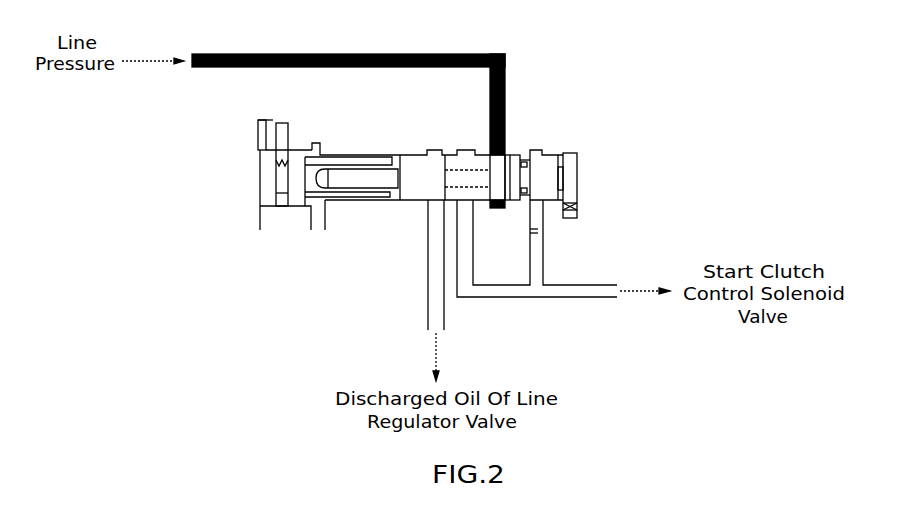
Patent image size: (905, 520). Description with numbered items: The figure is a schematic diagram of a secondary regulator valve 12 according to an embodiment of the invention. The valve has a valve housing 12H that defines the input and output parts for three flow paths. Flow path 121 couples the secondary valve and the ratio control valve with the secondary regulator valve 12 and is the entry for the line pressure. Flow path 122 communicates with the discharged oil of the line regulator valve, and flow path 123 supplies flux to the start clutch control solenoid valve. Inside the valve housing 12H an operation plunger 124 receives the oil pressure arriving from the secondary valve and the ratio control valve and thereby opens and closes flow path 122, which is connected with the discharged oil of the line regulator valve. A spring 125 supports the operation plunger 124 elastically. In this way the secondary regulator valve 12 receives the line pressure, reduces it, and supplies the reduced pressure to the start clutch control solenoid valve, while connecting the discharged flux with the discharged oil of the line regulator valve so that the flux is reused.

The secondary regulator valve 12 is at (361, 204).
The valve housing 12H is at (350, 157).
The flow path 121 is at (505, 99).
The flow path 122 is at (428, 300).
The flow path 123 is at (517, 297).
The operation plunger 124 is at (415, 155).
The spring 125 is at (316, 146).